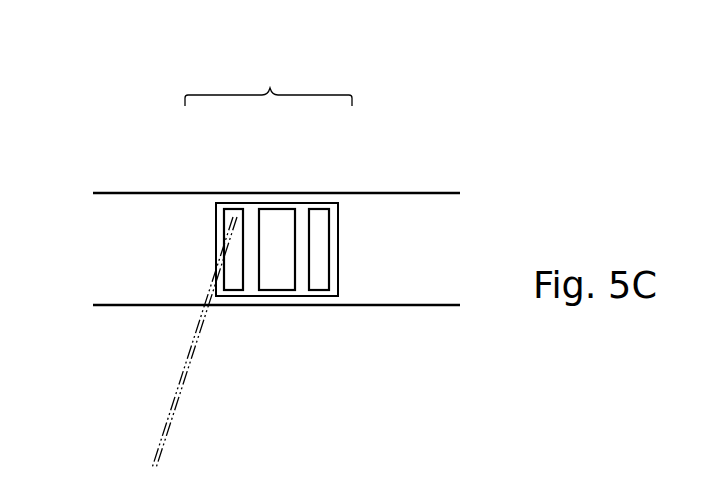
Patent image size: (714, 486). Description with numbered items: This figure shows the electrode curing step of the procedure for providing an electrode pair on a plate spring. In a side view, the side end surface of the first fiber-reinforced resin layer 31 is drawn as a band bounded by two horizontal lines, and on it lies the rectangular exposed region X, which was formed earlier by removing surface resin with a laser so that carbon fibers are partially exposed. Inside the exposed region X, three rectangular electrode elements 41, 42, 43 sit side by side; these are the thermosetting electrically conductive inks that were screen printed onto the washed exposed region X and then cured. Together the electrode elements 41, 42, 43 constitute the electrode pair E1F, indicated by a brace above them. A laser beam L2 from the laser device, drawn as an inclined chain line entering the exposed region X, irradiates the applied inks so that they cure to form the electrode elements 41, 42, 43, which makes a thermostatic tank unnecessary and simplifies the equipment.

The first fiber-reinforced resin layer 31 is at (110, 207).
The electrode element 41 is at (276, 215).
The electrode element 42 is at (232, 215).
The electrode element 43 is at (320, 215).
The electrode pair E1F is at (268, 80).
The exposed region X is at (340, 280).
The laser beam L2 is at (165, 428).